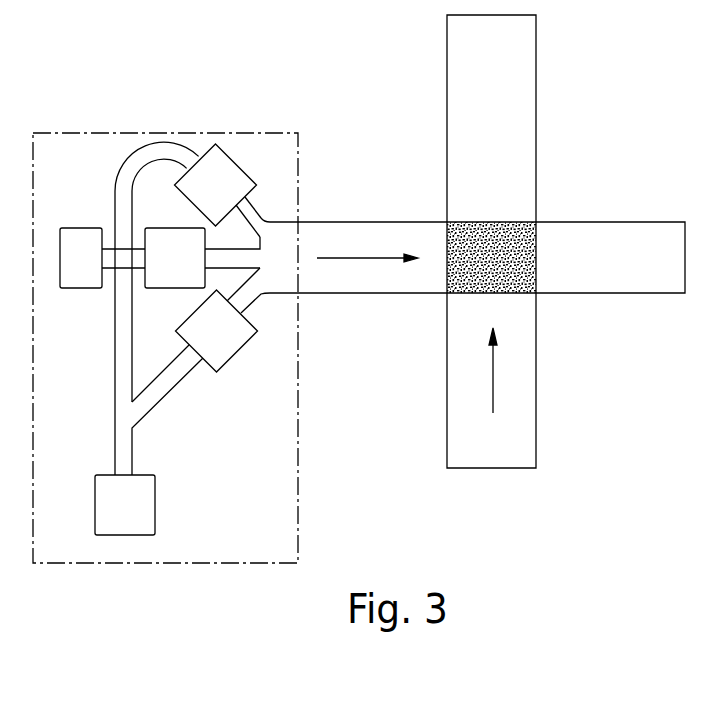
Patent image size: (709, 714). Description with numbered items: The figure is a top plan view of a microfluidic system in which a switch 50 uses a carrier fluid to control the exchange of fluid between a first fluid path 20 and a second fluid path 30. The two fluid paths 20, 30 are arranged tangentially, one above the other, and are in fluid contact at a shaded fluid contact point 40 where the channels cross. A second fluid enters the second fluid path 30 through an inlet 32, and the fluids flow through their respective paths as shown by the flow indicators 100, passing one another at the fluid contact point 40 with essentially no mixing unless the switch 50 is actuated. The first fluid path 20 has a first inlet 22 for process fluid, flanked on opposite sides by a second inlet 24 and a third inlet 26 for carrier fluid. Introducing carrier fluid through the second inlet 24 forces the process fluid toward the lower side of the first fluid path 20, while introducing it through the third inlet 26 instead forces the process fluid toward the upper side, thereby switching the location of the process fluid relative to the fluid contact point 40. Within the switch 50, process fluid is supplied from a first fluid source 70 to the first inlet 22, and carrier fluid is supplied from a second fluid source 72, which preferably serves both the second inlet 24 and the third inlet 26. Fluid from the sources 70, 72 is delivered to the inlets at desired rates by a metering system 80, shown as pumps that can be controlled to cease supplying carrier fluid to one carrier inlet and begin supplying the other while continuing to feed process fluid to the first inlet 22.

The first fluid path 20 is at (615, 268).
The first inlet 22 is at (226, 252).
The second inlet 24 is at (258, 213).
The third inlet 26 is at (248, 297).
The second fluid path 30 is at (505, 67).
The inlet 32 is at (497, 468).
The fluid contact point 40 is at (505, 221).
The switch 50 is at (183, 133).
The first fluid source 70 is at (95, 270).
The second fluid source 72 is at (139, 517).
The metering system 80 is at (189, 270).
The flow indicators 100 is at (363, 259).